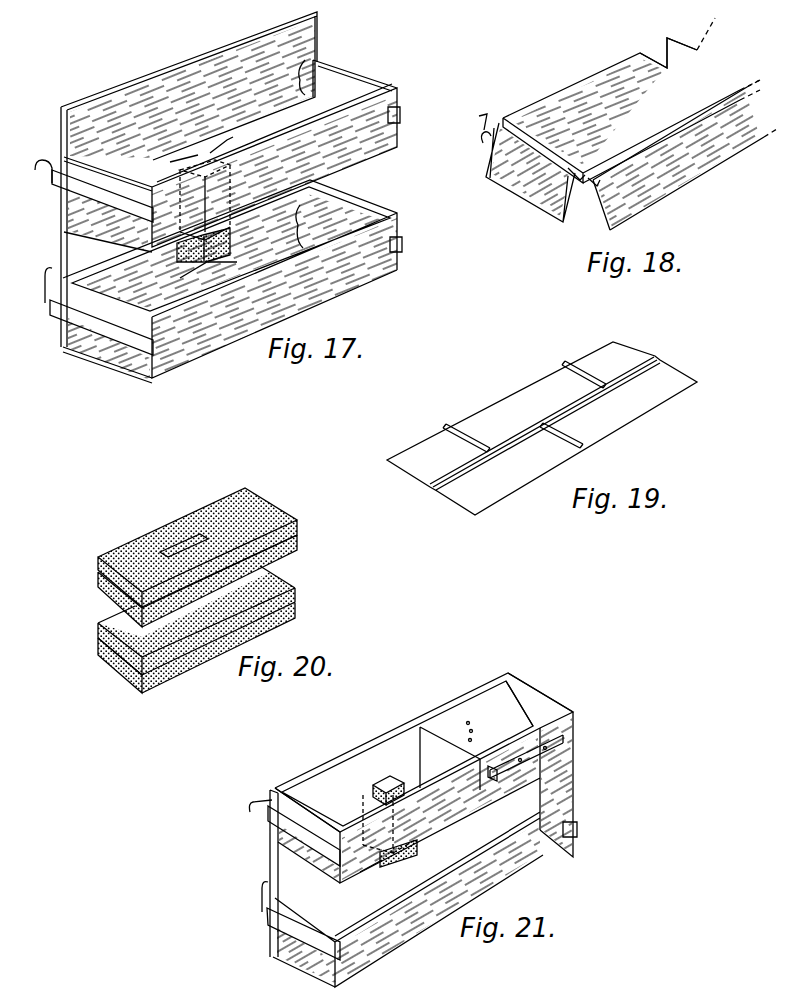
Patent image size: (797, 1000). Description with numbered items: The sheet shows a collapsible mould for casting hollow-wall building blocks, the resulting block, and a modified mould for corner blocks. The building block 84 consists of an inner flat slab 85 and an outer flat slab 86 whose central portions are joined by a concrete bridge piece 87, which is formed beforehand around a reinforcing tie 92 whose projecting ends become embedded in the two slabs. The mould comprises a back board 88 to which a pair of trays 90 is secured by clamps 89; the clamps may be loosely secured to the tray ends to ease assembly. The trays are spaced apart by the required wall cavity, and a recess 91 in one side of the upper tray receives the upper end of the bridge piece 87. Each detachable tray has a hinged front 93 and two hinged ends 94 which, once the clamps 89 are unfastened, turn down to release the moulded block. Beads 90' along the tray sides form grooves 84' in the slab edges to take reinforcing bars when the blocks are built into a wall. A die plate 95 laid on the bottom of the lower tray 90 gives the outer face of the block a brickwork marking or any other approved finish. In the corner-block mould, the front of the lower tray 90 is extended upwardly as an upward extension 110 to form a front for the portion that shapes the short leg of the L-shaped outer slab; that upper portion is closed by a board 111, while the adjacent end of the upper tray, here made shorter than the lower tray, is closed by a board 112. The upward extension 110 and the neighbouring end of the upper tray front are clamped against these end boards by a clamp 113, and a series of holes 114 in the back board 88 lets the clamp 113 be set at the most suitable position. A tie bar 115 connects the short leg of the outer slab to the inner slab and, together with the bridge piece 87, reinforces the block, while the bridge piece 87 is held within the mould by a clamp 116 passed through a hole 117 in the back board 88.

In FIG. 20, the building block 84 is at (197, 547).
In FIG. 20, the grooves 84' is at (195, 605).
In FIG. 20, the inner flat slab 85 is at (300, 518).
In FIG. 20, the outer flat slab 86 is at (295, 592).
In FIG. 17, the bridge piece 87 is at (245, 229).
In FIG. 20, the bridge piece 87 is at (122, 545).
In FIG. 21, the bridge piece 87 is at (417, 850).
In FIG. 17, the back board 88 is at (189, 179).
In FIG. 21, the back board 88 is at (377, 743).
In FIG. 17, the clamps 89 is at (402, 113).
In FIG. 18, the clamps 89 is at (440, 122).
In FIG. 21, the clamps 89 is at (265, 823).
In FIG. 17, the trays 90 is at (271, 205).
In FIG. 18, the trays 90 is at (631, 100).
In FIG. 21, the trays 90 is at (393, 842).
In FIG. 17, the beads 90' is at (277, 144).
In FIG. 18, the beads 90' is at (568, 214).
In FIG. 21, the beads 90' is at (357, 817).
In FIG. 18, the recess 91 is at (662, 52).
In FIG. 21, the recess 91 is at (345, 810).
In FIG. 17, the reinforcing tie 92 is at (212, 266).
In FIG. 21, the reinforcing tie 92 is at (372, 880).
In FIG. 17, the hinged front 93 is at (378, 150).
In FIG. 18, the hinged front 93 is at (685, 155).
In FIG. 21, the hinged front 93 is at (439, 857).
In FIG. 17, the hinged ends 94 is at (385, 78).
In FIG. 18, the hinged ends 94 is at (512, 183).
In FIG. 21, the hinged ends 94 is at (272, 835).
In FIG. 19, the die plate 95 is at (542, 428).
In FIG. 21, the upward extension 110 is at (562, 772).
In FIG. 21, the board 111 is at (525, 736).
In FIG. 21, the board 112 is at (450, 758).
In FIG. 21, the clamp 113 is at (553, 703).
In FIG. 21, the holes 114 is at (447, 722).
In FIG. 21, the tie bar 115 is at (488, 685).
In FIG. 21, the clamp 116 is at (402, 853).
In FIG. 21, the hole 117 is at (328, 773).